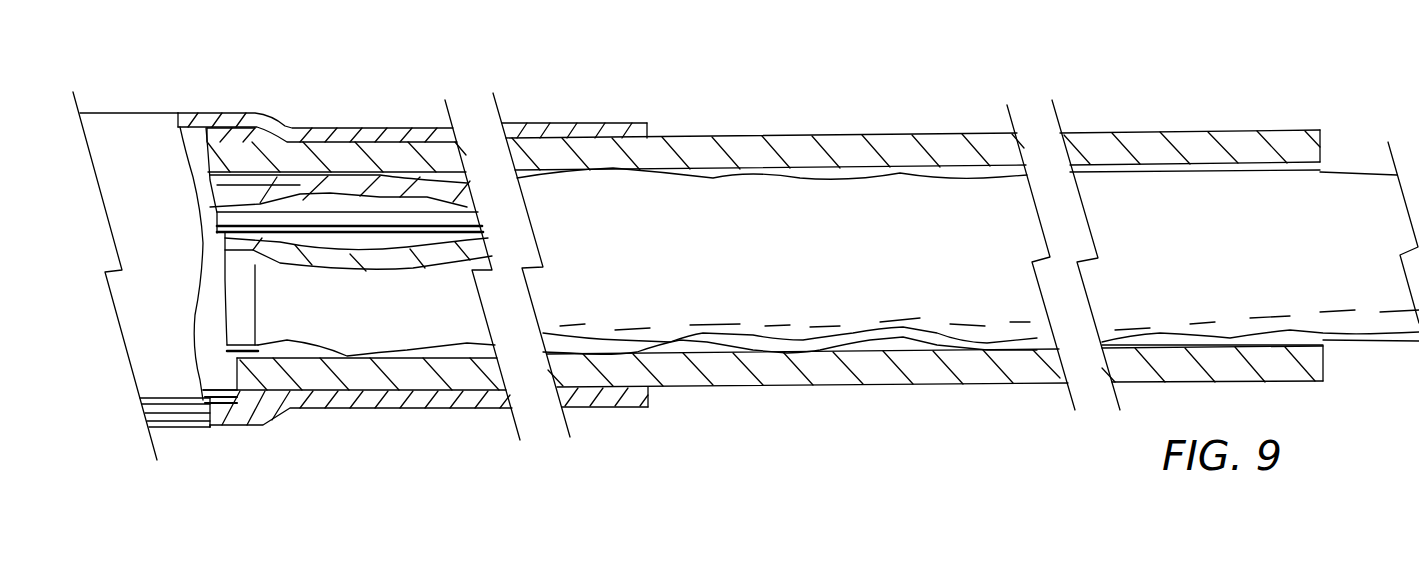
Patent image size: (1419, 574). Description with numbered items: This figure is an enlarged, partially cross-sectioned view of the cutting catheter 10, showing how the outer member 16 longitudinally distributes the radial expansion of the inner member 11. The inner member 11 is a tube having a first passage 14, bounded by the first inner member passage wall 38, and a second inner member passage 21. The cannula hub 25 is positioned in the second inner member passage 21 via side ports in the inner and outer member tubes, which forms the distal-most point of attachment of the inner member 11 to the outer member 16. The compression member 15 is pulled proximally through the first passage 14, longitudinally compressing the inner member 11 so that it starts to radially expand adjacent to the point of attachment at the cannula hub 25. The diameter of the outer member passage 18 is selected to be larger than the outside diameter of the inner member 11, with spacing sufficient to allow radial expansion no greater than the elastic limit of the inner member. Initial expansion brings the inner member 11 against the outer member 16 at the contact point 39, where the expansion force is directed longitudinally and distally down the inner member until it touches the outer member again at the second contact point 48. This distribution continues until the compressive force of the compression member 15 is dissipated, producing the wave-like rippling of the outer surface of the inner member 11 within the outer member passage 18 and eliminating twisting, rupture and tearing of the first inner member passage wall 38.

The cutting catheter 10 is at (1097, 55).
The inner member 11 is at (928, 184).
The first passage 14 is at (398, 207).
The compression member 15 is at (382, 218).
The outer member 16 is at (770, 136).
The outer member passage 18 is at (330, 208).
The second inner member passage 21 is at (442, 320).
The cannula hub 25 is at (248, 313).
The first inner member passage wall 38 is at (382, 222).
The contact point 39 is at (400, 362).
The second contact point 48 is at (642, 404).